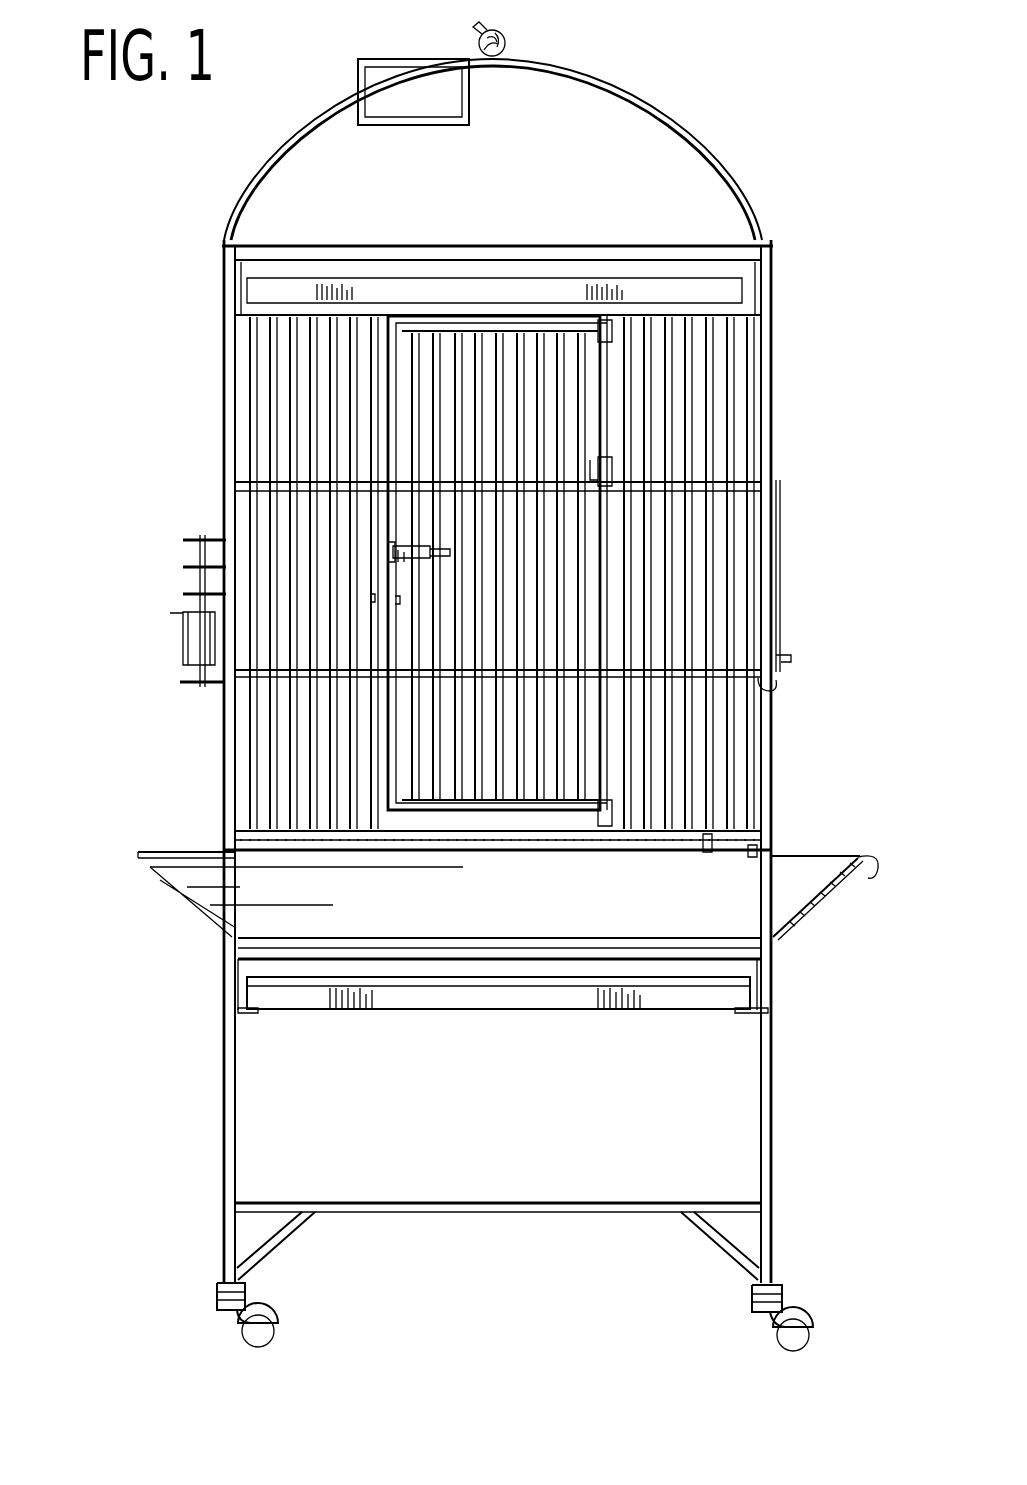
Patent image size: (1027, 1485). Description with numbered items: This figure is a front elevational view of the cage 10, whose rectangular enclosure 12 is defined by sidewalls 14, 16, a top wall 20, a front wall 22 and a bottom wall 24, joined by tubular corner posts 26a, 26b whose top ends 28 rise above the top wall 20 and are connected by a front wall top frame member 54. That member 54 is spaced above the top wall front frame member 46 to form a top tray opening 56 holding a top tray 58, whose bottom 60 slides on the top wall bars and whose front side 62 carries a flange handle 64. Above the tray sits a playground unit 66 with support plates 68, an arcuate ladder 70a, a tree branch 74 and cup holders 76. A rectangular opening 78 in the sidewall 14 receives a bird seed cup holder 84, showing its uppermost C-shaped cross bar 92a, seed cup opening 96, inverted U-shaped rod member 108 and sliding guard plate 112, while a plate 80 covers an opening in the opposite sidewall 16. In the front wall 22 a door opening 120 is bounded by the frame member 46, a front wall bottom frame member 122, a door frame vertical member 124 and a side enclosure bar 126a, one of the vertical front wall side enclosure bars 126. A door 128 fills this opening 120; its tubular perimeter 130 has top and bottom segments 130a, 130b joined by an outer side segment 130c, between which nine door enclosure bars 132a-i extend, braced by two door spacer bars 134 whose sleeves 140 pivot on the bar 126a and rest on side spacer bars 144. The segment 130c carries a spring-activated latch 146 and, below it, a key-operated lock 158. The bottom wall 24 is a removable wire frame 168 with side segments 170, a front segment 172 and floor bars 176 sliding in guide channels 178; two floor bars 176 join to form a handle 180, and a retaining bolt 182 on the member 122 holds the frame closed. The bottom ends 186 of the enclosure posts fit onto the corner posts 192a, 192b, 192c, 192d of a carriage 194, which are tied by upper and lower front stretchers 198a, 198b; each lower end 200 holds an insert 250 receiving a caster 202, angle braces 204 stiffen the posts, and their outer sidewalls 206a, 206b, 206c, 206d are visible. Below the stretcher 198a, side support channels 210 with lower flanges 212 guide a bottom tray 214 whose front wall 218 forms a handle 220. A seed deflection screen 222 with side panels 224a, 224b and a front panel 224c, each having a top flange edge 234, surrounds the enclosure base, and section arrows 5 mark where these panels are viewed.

The cage 10 is at (207, 341).
The enclosure 12 is at (765, 356).
The sidewall 14 is at (225, 469).
The sidewall 16 is at (775, 471).
The top wall 20 is at (656, 300).
The front wall 22 is at (750, 583).
The bottom wall 24 is at (240, 847).
The corner post 26a is at (226, 393).
The corner post 26b is at (760, 417).
The top ends 28 is at (223, 274).
The top wall front frame member 46 is at (521, 311).
The front wall top frame member 54 is at (406, 250).
The top tray opening 56 is at (226, 244).
The top tray 58 is at (291, 283).
The bottom 60 is at (441, 306).
The front side 62 is at (613, 288).
The handle 64 is at (361, 288).
The playground unit 66 is at (576, 62).
The support plates 68 is at (769, 241).
The arcuate shaped ladder 70a is at (689, 131).
The tree branch 74 is at (502, 38).
The cup holders 76 is at (470, 122).
The opening 78 is at (219, 690).
The plate 80 is at (778, 541).
The bird seed cup holder 84 is at (185, 569).
The cross bar 92a is at (185, 541).
The seed cup opening 96 is at (178, 623).
The inverted U-shaped rod member 108 is at (205, 535).
The guard plate 112 is at (182, 641).
The door opening 120 is at (483, 857).
The front wall bottom frame member 122 is at (731, 840).
The door frame vertical member 124 is at (373, 849).
The front wall side enclosure bars 126 is at (741, 747).
The front wall side enclosure bar 126a is at (760, 733).
The door 128 is at (581, 812).
The perimeter 130 is at (556, 802).
The top segment 130a is at (472, 326).
The bottom segment 130b is at (491, 820).
The outer side segment 130c is at (383, 830).
The door enclosure bars 132a-i is at (591, 830).
The door spacer bars 134 is at (531, 486).
The sleeves 140 is at (613, 332).
The side spacer bars 144 is at (761, 483).
The spring-activated latch 146 is at (403, 546).
The key-operated lock 158 is at (400, 612).
The wire frame 168 is at (779, 859).
The side segments 170 is at (271, 853).
The front segment 172 is at (286, 853).
The floor bars 176 is at (301, 853).
The guide channels 178 is at (237, 851).
The handle 180 is at (518, 847).
The retaining bolt 182 is at (748, 858).
The bottom ends 186 is at (807, 862).
The carriage corner post 192a is at (237, 1163).
The carriage corner post 192b is at (759, 1121).
The carriage corner post 192c is at (758, 1161).
The carriage corner post 192d is at (239, 1189).
The carriage 194 is at (786, 1169).
The upper front stretcher 198a is at (741, 962).
The lower front stretcher 198b is at (496, 1204).
The lower end 200 is at (228, 1233).
The caster 202 is at (277, 1318).
The angle braces 204 is at (283, 1241).
The outer sidewall 206a is at (226, 1063).
The outer sidewall 206b is at (771, 1093).
The outer sidewall 206c is at (773, 1197).
The outer sidewall 206d is at (229, 1133).
The bottom tray side support channels 210 is at (246, 1014).
The lower flange 212 is at (310, 1016).
The bottom tray 214 is at (546, 1003).
The front wall 218 is at (464, 1003).
The handle 220 is at (591, 1003).
The seed deflection screen 222 is at (791, 853).
The side panel 224a is at (146, 856).
The side panel 224b is at (846, 886).
The front panel 224c is at (339, 925).
The top flange edge 234 is at (843, 877).
The insert 250 is at (219, 1296).
The section line 5 is at (371, 916).